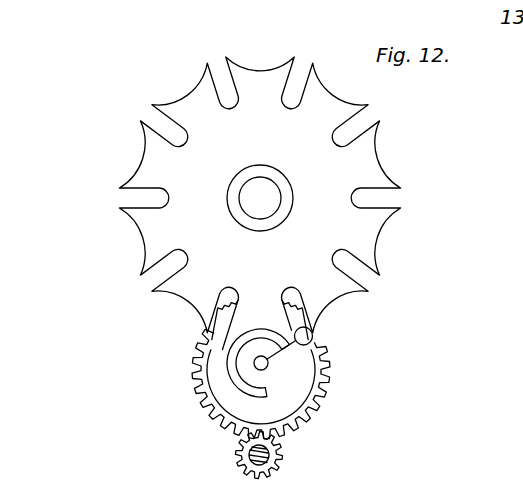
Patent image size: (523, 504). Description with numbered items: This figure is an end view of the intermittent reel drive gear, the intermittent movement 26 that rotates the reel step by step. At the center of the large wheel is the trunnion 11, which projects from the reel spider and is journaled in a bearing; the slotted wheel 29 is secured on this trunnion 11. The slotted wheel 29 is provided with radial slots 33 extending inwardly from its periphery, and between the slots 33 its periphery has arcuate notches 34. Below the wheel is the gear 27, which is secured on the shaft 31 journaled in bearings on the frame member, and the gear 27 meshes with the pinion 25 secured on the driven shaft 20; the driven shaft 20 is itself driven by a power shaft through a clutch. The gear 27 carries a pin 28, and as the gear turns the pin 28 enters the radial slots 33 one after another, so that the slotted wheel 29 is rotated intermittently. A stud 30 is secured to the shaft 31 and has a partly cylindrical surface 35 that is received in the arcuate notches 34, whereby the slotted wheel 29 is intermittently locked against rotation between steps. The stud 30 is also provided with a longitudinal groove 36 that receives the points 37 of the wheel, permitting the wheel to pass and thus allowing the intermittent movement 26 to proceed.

The trunnion 11 is at (266, 201).
The driven shaft 20 is at (248, 464).
The pinion 25 is at (283, 455).
The intermittent movement 26 is at (312, 337).
The gear 27 is at (317, 395).
The pin 28 is at (313, 338).
The slotted wheel 29 is at (307, 240).
The stud 30 is at (247, 367).
The shaft 31 is at (257, 368).
The radial slots 33 is at (216, 70).
The arcuate notches 34 is at (141, 237).
The partly cylindrical surface 35 is at (226, 363).
The longitudinal groove 36 is at (280, 371).
The points 37 is at (203, 332).